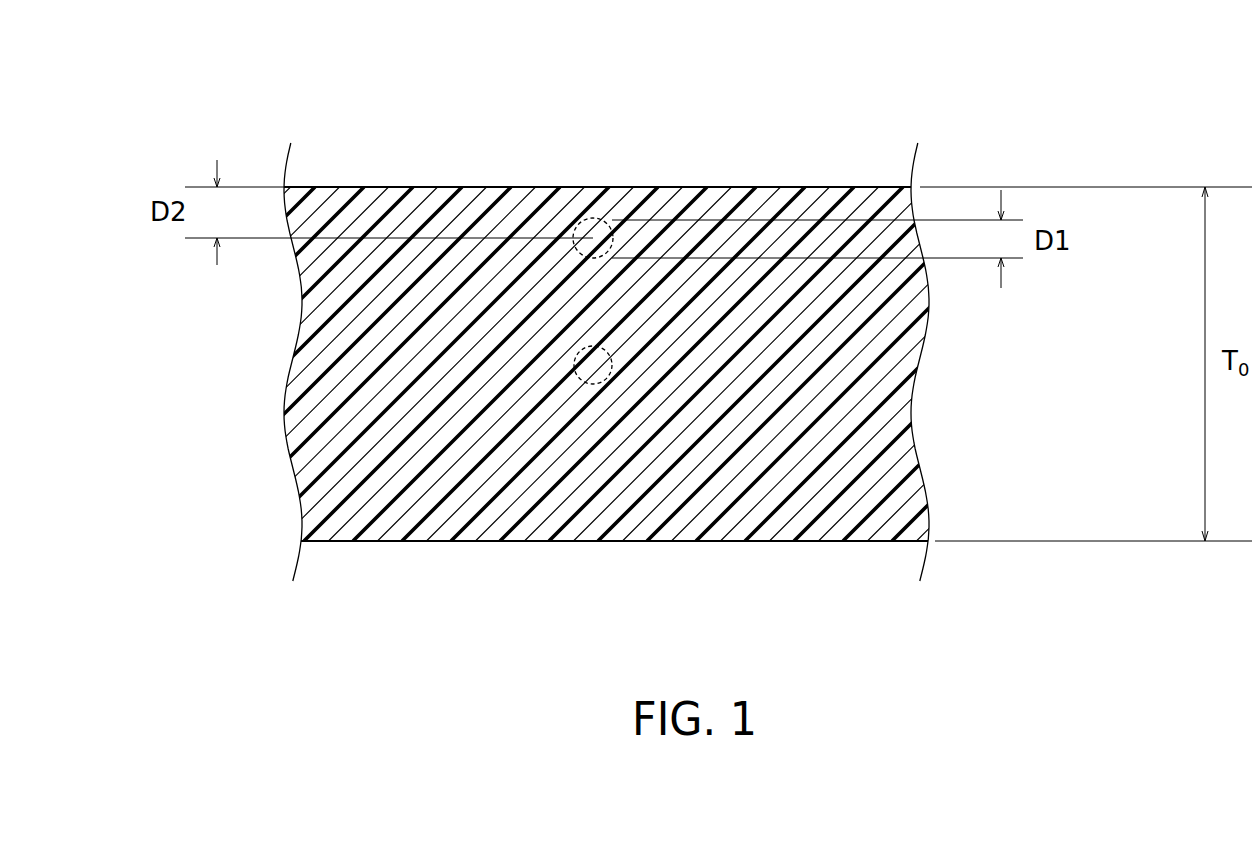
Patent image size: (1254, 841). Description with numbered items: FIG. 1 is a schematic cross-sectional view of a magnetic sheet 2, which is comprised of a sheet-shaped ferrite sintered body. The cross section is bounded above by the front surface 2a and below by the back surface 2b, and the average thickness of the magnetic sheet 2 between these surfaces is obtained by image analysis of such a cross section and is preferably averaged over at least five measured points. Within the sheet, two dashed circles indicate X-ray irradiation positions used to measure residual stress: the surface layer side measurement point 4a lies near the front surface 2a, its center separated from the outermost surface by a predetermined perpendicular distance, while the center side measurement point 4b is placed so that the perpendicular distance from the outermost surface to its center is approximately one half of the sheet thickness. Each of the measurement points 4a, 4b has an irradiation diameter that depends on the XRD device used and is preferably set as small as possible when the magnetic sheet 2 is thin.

The magnetic sheet 2 is at (488, 125).
The front surface 2a is at (740, 187).
The back surface 2b is at (763, 541).
The surface layer side measurement point 4a is at (573, 226).
The center side measurement point 4b is at (600, 384).